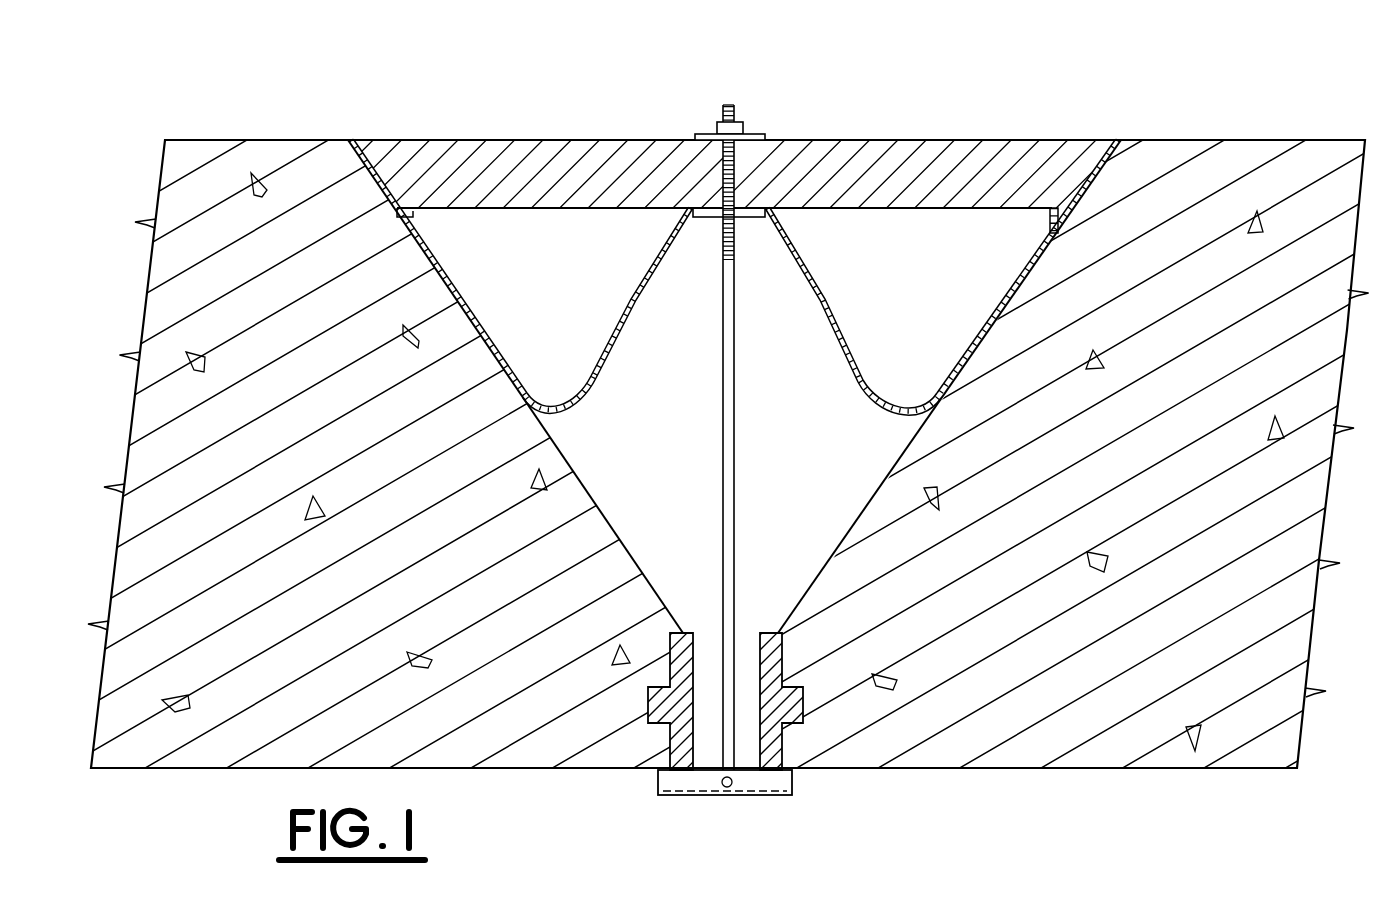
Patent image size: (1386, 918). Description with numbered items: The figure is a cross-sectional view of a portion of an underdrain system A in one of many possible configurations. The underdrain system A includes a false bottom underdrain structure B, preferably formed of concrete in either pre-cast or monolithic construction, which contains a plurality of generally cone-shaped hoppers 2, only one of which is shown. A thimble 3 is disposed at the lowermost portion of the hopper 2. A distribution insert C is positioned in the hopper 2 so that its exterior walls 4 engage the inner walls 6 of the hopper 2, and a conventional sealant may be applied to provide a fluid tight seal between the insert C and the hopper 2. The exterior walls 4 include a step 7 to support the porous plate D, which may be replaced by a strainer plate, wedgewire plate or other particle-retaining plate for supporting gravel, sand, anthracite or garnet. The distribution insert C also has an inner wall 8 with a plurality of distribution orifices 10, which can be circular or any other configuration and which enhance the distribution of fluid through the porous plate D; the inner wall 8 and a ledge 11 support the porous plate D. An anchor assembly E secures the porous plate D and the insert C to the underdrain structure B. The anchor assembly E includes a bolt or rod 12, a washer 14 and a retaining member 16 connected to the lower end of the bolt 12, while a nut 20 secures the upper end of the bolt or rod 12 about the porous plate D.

The hopper 2 is at (590, 567).
The thimble 3 is at (658, 738).
The exterior walls 4 is at (734, 295).
The inner walls 6 is at (602, 512).
The step 7 is at (413, 222).
The inner wall 8 is at (635, 318).
The distribution orifices 10 is at (567, 408).
The ledge 11 is at (703, 217).
The bolt or rod 12 is at (735, 543).
The washer 14 is at (752, 134).
The retaining member 16 is at (780, 795).
The nut 20 is at (717, 128).
The underdrain system A is at (340, 88).
The false bottom underdrain structure B is at (228, 120).
The distribution insert C is at (837, 270).
The porous plate D is at (975, 120).
The anchor assembly E is at (722, 86).